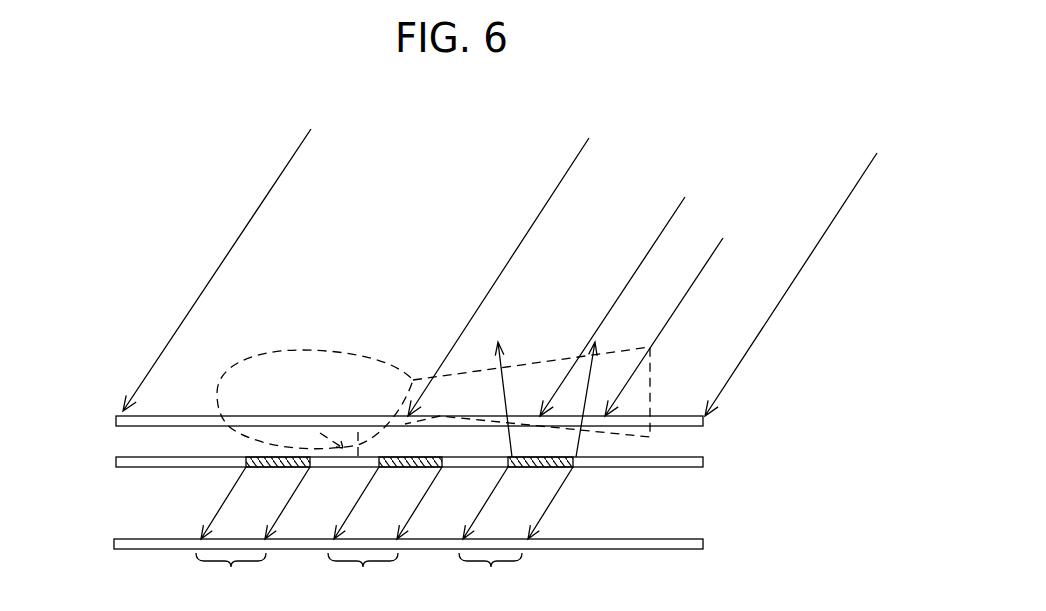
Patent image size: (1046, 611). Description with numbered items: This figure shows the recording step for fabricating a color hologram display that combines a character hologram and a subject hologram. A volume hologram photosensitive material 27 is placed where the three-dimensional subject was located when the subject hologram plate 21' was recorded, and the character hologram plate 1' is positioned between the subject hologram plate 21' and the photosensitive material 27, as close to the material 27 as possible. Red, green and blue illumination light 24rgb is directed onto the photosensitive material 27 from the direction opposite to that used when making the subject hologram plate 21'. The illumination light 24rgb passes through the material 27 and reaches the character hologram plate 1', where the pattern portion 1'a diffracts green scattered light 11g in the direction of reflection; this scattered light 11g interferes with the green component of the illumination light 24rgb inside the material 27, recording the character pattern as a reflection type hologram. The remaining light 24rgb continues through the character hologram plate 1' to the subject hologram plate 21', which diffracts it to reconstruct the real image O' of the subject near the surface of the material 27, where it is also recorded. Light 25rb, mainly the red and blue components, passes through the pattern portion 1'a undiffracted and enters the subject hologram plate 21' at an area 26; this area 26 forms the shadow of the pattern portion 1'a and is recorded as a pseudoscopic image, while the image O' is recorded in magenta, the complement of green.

The green scattered light 11g is at (597, 338).
The illumination light 24rgb is at (790, 283).
The volume hologram photosensitive material 27 is at (703, 421).
The character hologram plate 1' is at (450, 452).
The pattern portion 1'a is at (440, 480).
The transmitted light component 25rb is at (550, 503).
The subject hologram plate 21' is at (452, 534).
The area 26 is at (359, 582).
The real image O' is at (423, 384).